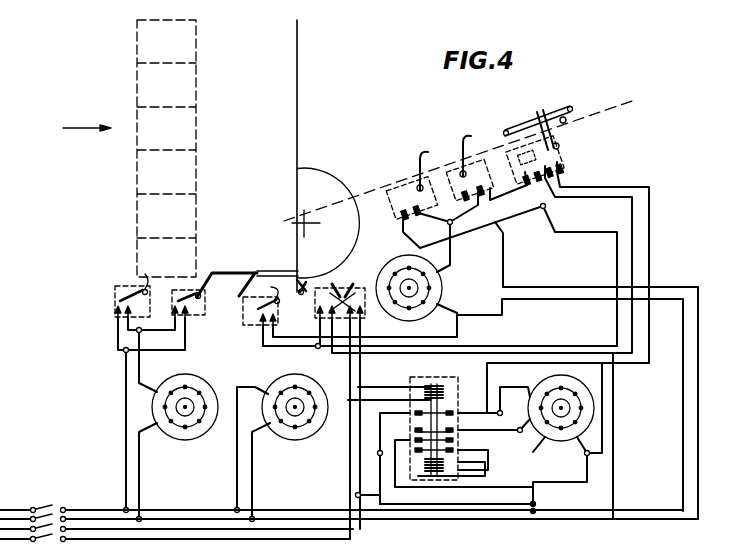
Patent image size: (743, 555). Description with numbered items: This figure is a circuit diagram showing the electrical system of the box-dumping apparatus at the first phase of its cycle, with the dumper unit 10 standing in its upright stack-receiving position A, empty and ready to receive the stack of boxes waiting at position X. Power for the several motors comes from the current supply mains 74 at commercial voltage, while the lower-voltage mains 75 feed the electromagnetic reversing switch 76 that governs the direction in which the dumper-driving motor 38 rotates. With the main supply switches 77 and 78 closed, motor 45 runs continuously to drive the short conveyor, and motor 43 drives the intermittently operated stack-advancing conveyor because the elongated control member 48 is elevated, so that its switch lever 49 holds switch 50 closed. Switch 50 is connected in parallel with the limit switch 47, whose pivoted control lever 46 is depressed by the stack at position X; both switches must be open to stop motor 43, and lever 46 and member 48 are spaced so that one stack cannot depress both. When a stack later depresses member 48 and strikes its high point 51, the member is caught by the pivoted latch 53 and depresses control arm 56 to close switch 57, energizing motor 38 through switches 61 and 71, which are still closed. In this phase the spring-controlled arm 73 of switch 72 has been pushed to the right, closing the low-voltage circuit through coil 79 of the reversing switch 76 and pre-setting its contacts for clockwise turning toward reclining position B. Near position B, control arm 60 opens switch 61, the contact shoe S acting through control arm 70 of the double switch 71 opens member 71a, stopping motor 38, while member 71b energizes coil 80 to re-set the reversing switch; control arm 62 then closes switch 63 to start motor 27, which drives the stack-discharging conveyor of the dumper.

The dumper unit 10 is at (284, 127).
The motor 27 is at (402, 318).
The motor 38 is at (568, 441).
The motor 43 is at (185, 440).
The motor 45 is at (298, 440).
The pivoted control lever 46 is at (147, 294).
The limit switch 47 is at (113, 307).
The elongated control member 48 is at (243, 272).
The switch lever 49 is at (203, 291).
The switch 50 is at (203, 312).
The high point 51 is at (280, 271).
The pivoted latch 53 is at (309, 281).
The control arm 56 is at (280, 302).
The switch 57 is at (246, 326).
The control arm 60 is at (419, 159).
The switch 61 is at (400, 212).
The control arm 62 is at (464, 141).
The switch 63 is at (462, 192).
The control arm 70 is at (545, 116).
The double switch 71 is at (560, 158).
The switch member 71a is at (512, 131).
The switch member 71b is at (563, 151).
The switch 72 is at (277, 322).
The spring-controlled arm 73 is at (354, 284).
The current supply mains 74 is at (80, 518).
The mains 75 is at (354, 529).
The electromagnetic reversing switch 76 is at (413, 380).
The main supply switch 77 is at (44, 507).
The main supply switch 78 is at (44, 540).
The coil 79 is at (448, 384).
The coil 80 is at (445, 464).
The stack-receiving position A is at (310, 54).
The reclining position B is at (636, 101).
The contact shoe S is at (572, 107).
The stack position X is at (166, 148).